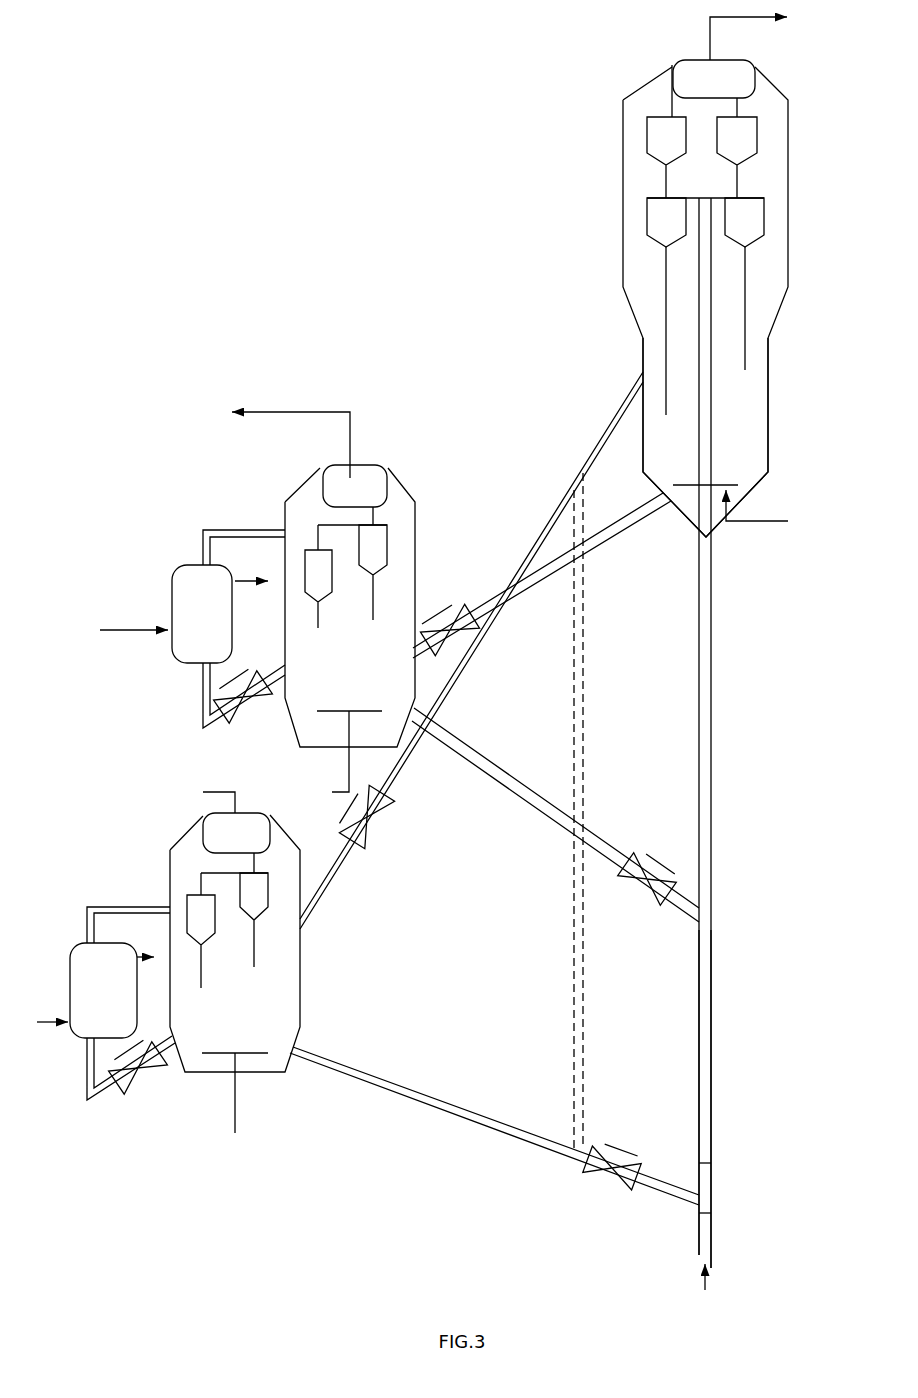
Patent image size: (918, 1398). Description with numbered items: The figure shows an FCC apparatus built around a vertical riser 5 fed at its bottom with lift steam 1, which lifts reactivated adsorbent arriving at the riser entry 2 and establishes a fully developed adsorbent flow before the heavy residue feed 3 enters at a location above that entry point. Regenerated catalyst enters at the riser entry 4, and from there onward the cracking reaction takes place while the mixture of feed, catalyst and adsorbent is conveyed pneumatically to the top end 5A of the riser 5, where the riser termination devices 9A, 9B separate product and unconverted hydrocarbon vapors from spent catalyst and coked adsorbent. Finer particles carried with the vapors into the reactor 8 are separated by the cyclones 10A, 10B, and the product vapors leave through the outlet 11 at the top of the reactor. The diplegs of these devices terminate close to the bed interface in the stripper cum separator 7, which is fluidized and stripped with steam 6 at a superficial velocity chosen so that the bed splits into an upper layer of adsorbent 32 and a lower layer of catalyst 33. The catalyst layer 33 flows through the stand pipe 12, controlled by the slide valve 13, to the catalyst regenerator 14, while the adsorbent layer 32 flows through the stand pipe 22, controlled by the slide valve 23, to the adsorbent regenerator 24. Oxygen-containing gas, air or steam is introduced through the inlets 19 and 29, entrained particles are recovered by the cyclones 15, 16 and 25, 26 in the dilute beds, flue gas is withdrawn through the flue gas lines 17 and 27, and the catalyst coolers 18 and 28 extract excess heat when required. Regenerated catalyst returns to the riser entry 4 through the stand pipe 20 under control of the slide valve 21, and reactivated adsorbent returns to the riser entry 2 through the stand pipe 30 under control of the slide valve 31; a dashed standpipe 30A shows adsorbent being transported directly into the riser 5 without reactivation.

The lift steam 1 is at (706, 1292).
The riser entry 2 is at (711, 1213).
The heavy residue feed 3 is at (711, 1164).
The riser entry 4 is at (723, 1090).
The riser 5 is at (722, 789).
The top end of the riser 5A is at (705, 190).
The steam 6 is at (769, 512).
The stripper cum separator 7 is at (773, 403).
The reactor 8 is at (790, 183).
The riser termination device 9A is at (666, 222).
The riser termination device 9B is at (744, 222).
The cyclone 10A is at (666, 131).
The cyclone 10B is at (737, 148).
The product outlet 11 is at (766, 33).
The stand pipe 12 is at (542, 575).
The slide valve 13 is at (450, 619).
The catalyst regenerator 14 is at (350, 606).
The cyclone 15 is at (346, 576).
The cyclone 16 is at (373, 563).
The flue gas line 17 is at (267, 440).
The catalyst cooler 18 is at (192, 629).
The inlet 19 is at (338, 757).
The stand pipe 20 is at (555, 815).
The slide valve 21 is at (640, 862).
The stand pipe 22 is at (471, 650).
The slide valve 23 is at (370, 816).
The adsorbent regenerator 24 is at (235, 942).
The cyclone 25 is at (227, 930).
The cyclone 26 is at (254, 910).
The flue gas line 27 is at (192, 798).
The catalyst cooler 28 is at (106, 1003).
The inlet 29 is at (235, 1109).
The stand pipe 30 is at (373, 1080).
The standpipe 30A is at (552, 811).
The slide valve 31 is at (624, 1146).
The layer of adsorbent 32 is at (705, 331).
The layer of catalyst 33 is at (710, 467).